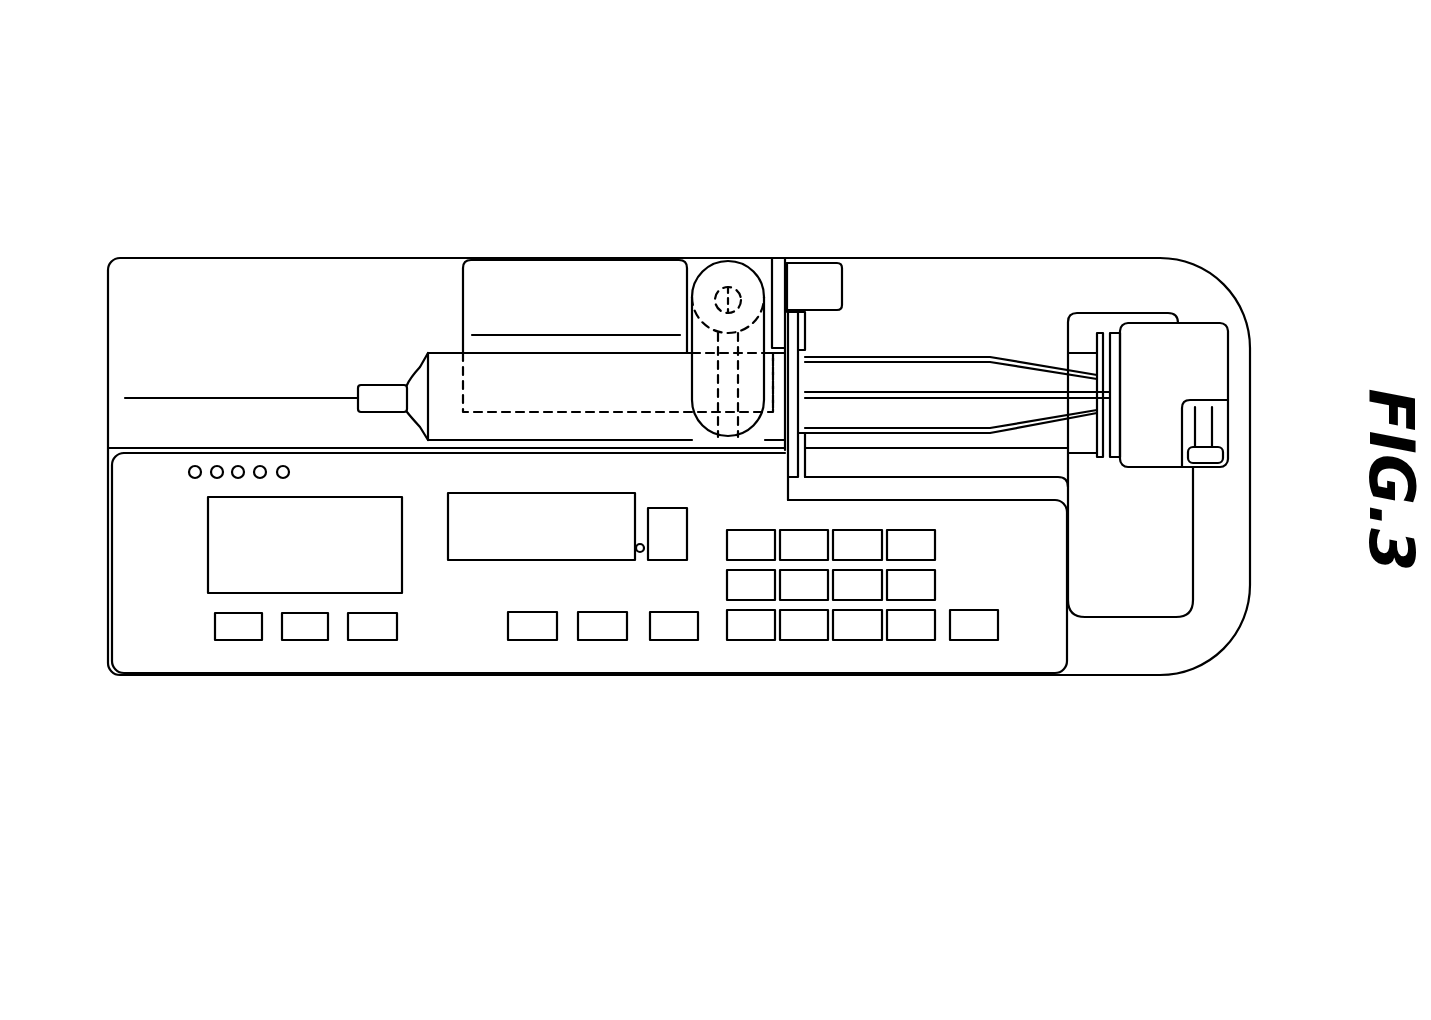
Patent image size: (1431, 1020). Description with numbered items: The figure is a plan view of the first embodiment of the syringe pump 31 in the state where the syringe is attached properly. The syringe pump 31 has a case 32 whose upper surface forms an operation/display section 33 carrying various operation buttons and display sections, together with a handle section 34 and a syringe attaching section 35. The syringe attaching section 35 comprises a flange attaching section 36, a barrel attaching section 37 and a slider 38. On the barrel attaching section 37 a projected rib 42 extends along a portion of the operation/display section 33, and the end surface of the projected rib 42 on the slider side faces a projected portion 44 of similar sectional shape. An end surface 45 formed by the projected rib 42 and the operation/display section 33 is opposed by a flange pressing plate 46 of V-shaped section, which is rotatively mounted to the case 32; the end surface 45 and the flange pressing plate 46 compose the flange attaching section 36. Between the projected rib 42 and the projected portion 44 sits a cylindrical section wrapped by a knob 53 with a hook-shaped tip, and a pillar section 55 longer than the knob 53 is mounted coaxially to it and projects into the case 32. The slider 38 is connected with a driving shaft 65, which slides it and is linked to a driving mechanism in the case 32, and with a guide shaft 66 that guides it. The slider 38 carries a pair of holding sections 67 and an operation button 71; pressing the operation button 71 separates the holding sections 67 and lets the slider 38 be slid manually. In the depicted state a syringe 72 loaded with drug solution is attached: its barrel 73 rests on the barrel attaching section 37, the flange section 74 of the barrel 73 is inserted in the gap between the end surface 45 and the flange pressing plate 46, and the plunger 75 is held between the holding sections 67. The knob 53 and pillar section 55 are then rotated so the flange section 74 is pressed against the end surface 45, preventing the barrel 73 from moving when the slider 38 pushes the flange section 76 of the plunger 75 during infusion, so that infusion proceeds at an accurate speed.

The syringe pump 31 is at (710, 397).
The case 32 is at (670, 677).
The operation/display section 33 is at (512, 653).
The handle section 34 is at (1220, 612).
The syringe attaching section 35 is at (620, 451).
The flange attaching section 36 is at (838, 335).
The barrel attaching section 37 is at (452, 288).
The slider 38 is at (1213, 318).
The projected rib 42 is at (589, 284).
The projected portion 44 is at (777, 257).
The end surface 45 is at (810, 437).
The flange pressing plate 46 is at (810, 333).
The knob 53 is at (703, 373).
The pillar section 55 is at (728, 287).
The driving shaft 65 is at (1100, 455).
The guide shaft 66 is at (1082, 335).
The holding sections 67 is at (1103, 335).
The operation button 71 is at (1210, 462).
The syringe 72 is at (419, 362).
The barrel 73 is at (528, 375).
The flange section 74 is at (785, 422).
The plunger 75 is at (968, 377).
The flange section 76 is at (1123, 367).